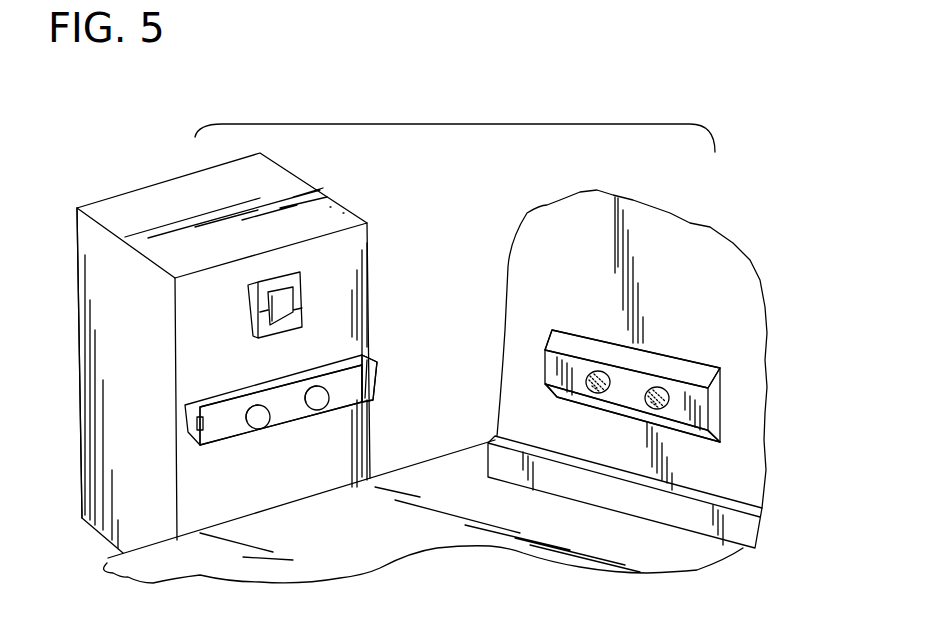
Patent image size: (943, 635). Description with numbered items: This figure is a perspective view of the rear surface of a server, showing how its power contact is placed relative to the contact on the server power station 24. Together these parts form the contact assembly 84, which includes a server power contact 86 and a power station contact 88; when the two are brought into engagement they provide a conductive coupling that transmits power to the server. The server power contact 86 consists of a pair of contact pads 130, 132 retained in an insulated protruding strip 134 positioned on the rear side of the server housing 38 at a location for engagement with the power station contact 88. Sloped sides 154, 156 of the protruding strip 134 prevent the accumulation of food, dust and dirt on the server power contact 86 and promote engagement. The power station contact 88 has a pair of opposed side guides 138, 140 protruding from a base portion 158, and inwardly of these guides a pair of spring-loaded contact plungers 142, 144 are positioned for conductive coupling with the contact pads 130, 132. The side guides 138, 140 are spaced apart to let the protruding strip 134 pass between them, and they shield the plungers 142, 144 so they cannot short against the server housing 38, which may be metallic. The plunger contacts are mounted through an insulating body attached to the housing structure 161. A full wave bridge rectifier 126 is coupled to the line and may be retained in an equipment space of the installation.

The server power station 24 is at (494, 514).
The server housing 38 is at (646, 222).
The contact assembly 84 is at (436, 224).
The server power contact 86 is at (733, 327).
The power station contact 88 is at (238, 375).
The full wave bridge rectifier 126 is at (298, 290).
The contact pad 130 is at (597, 393).
The contact pad 132 is at (657, 388).
The insulated protruding strip 134 is at (717, 415).
The side guide 138 is at (200, 438).
The side guide 140 is at (377, 392).
The spring-loaded contact plunger 142 is at (262, 430).
The spring-loaded contact plunger 144 is at (323, 410).
The sloped side 154 is at (568, 336).
The sloped side 156 is at (687, 432).
The base portion 158 is at (341, 378).
The housing structure 161 is at (118, 268).